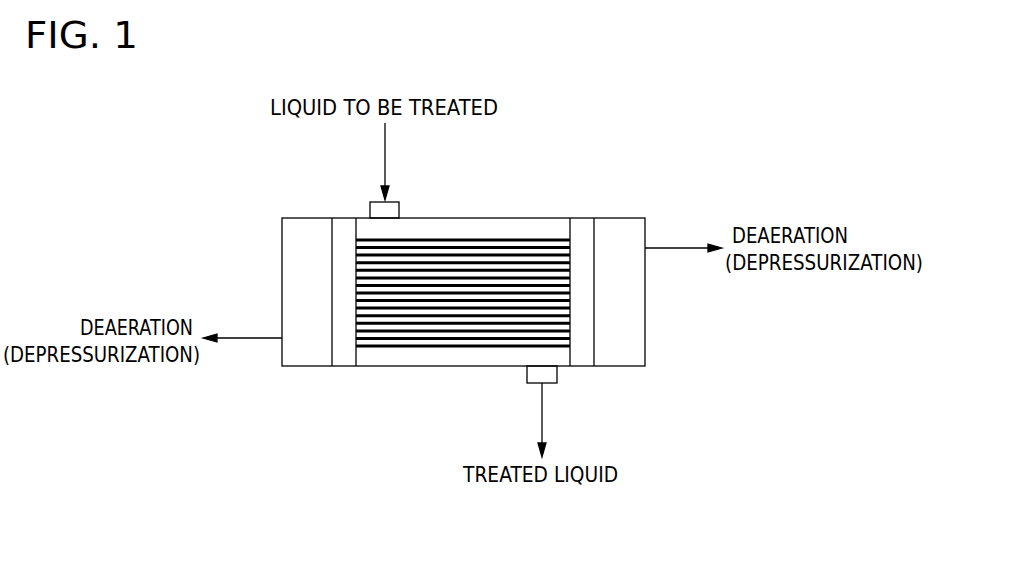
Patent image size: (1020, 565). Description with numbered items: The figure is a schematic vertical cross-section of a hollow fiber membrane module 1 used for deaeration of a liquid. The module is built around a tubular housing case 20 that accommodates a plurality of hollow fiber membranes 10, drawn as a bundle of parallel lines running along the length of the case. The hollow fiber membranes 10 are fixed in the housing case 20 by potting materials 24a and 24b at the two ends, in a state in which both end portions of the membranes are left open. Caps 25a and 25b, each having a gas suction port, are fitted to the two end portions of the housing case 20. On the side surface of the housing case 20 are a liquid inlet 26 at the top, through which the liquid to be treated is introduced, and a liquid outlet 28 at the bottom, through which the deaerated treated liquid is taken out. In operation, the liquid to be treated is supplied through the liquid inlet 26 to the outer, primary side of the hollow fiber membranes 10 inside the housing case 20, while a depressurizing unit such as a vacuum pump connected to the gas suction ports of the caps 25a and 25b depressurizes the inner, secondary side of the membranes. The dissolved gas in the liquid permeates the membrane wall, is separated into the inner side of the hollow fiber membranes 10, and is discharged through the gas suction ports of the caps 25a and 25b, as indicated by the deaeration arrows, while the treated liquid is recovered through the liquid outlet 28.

The hollow fiber membrane module 1 is at (695, 142).
The hollow fiber membranes 10 is at (418, 313).
The housing case 20 is at (308, 218).
The potting material 24a is at (344, 357).
The potting material 24b is at (582, 358).
The cap 25a is at (282, 254).
The cap 25b is at (645, 321).
The liquid inlet 26 is at (400, 211).
The liquid outlet 28 is at (527, 375).